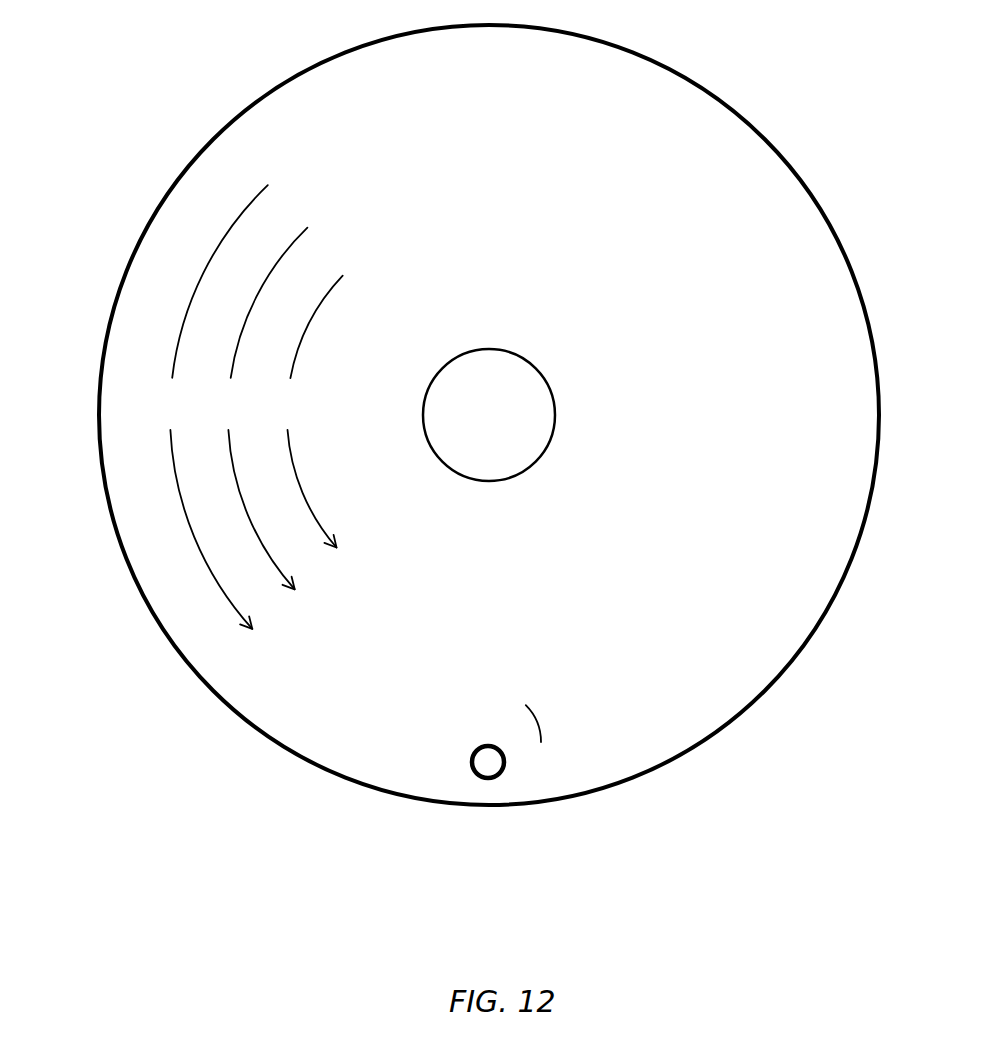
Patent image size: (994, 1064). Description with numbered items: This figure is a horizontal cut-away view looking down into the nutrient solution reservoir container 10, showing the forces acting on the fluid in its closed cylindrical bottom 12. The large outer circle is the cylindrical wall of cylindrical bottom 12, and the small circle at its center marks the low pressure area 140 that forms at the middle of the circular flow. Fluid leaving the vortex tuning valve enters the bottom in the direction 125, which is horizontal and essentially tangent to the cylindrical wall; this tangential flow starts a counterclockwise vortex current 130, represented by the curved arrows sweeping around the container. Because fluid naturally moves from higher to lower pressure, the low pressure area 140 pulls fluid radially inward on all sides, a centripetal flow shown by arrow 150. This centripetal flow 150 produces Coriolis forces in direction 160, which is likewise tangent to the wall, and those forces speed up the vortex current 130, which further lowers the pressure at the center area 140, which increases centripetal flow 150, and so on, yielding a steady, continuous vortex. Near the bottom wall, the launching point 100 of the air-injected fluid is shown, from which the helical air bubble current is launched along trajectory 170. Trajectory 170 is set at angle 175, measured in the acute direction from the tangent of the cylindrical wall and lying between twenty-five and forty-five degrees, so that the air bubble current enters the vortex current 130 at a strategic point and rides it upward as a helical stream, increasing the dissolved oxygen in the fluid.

The nutrient solution reservoir container 10 is at (458, 415).
The cylindrical bottom 12 is at (219, 701).
The position of agitator 100 is at (470, 772).
The direction of fluid flowing from vortex tuning valve 125 is at (489, 742).
The vortex current 130 is at (324, 343).
The low pressure area 140 is at (518, 431).
The centripetal flow 150 is at (488, 90).
The direction of the Coriolis force 160 is at (488, 90).
The trajectory of the helical air bubble current 170 is at (489, 742).
The angle 175 is at (539, 729).